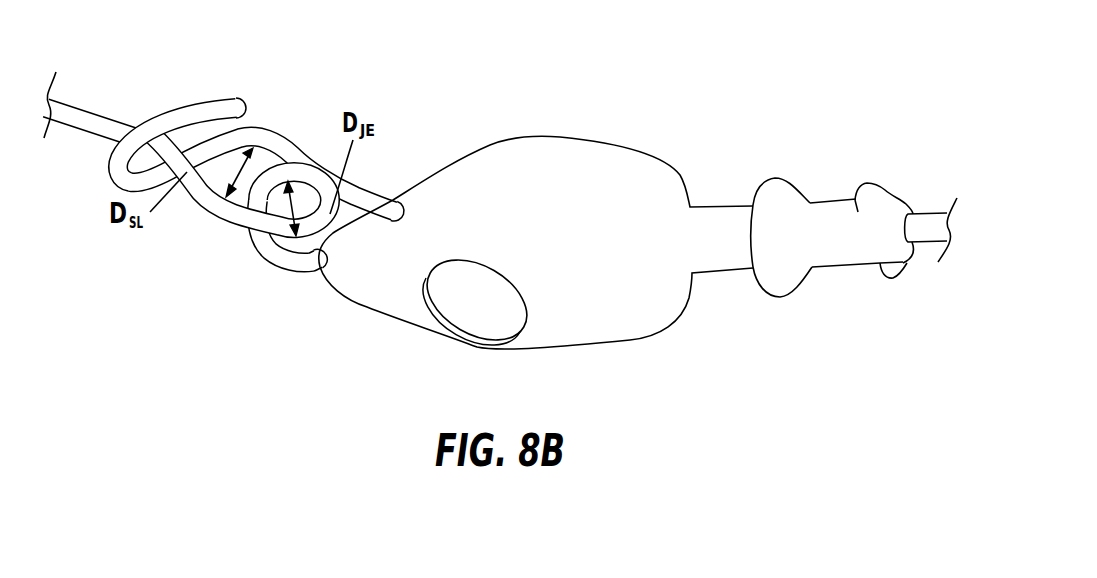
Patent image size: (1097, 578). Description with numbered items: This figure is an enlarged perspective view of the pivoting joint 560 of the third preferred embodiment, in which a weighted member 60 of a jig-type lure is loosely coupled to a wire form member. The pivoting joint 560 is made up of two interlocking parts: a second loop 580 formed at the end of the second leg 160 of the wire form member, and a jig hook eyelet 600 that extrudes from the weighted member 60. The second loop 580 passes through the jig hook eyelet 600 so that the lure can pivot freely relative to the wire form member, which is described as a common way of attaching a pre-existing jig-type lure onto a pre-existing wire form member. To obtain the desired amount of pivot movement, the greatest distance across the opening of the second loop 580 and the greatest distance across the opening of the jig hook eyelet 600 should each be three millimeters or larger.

The weighted member 60 is at (520, 153).
The second leg 160 is at (77, 110).
The pivoting joint 560 is at (432, 135).
The second loop 580 is at (218, 214).
The jig hook eyelet 600 is at (293, 262).